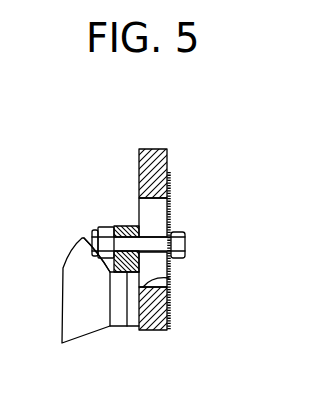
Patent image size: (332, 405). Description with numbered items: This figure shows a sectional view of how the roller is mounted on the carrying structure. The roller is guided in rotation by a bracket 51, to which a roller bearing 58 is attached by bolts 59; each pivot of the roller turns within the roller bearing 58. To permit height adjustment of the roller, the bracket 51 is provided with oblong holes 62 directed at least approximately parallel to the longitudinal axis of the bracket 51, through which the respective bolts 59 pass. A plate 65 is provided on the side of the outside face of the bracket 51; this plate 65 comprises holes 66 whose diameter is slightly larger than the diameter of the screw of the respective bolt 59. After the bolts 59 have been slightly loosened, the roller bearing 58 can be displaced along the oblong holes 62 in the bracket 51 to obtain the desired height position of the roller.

The bracket 51 is at (139, 163).
The plate 65 is at (170, 186).
The roller bearing 58 is at (126, 226).
The bolt 59 is at (185, 239).
The hole 66 is at (172, 266).
The oblong hole 62 is at (172, 283).